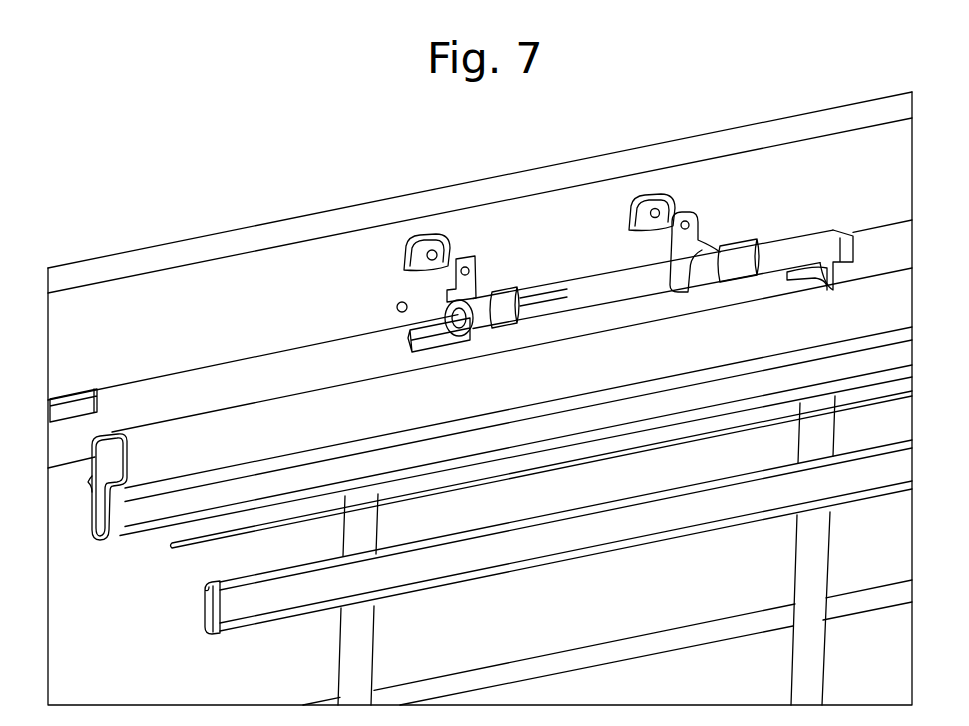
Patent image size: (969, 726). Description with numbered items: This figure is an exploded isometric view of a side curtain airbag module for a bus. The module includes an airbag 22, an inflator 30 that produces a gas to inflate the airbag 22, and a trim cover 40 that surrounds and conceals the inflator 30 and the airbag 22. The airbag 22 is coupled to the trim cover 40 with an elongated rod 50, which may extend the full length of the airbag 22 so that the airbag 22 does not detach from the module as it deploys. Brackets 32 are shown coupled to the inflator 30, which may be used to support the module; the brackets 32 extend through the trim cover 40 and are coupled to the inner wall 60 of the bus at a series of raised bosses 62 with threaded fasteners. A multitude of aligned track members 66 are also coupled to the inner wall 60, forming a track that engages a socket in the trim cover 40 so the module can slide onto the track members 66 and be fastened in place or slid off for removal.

The airbag 22 is at (208, 617).
The inflator 30 is at (610, 290).
The brackets 32 is at (698, 223).
The trim cover 40 is at (248, 420).
The rod 50 is at (170, 547).
The inner wall 60 is at (276, 272).
The raised bosses 62 is at (653, 193).
The track members 66 is at (75, 400).